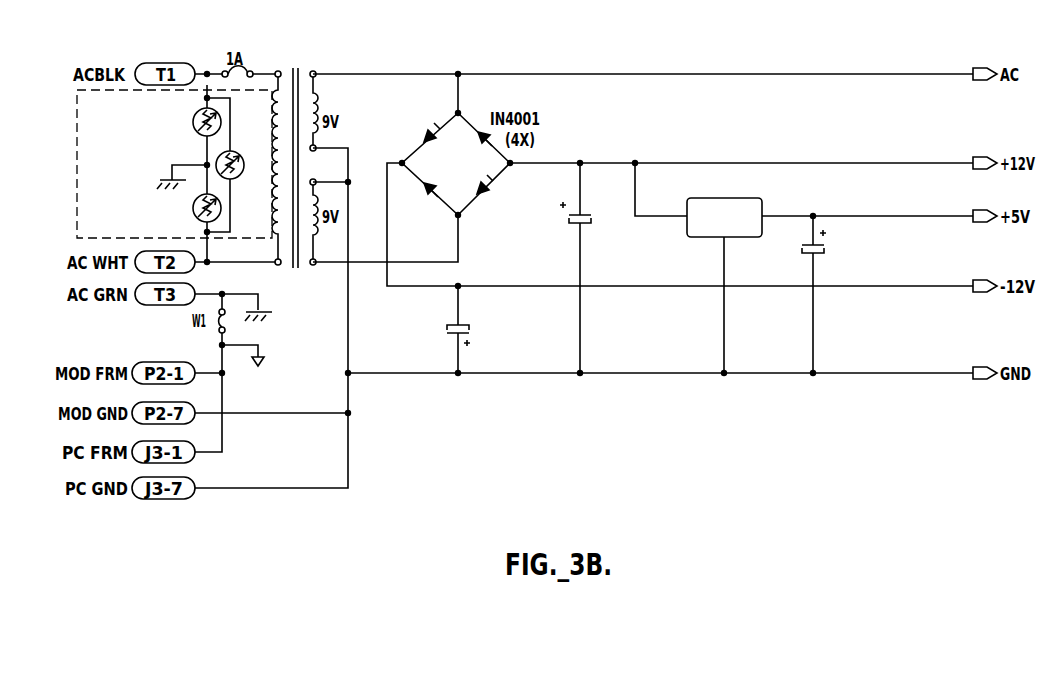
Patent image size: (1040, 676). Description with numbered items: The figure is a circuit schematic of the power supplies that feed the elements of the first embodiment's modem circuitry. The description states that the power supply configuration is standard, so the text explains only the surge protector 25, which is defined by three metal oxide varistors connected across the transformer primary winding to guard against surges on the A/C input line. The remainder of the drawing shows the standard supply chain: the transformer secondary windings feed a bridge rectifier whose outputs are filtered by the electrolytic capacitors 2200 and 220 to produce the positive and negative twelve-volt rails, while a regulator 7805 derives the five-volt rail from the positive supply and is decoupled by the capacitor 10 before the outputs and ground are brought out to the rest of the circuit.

The surge protector 25 is at (77, 210).
The 2200 microfarad filter capacitor 2200 is at (558, 268).
The 220 microfarad filter capacitor 220 is at (475, 330).
The 10 microfarad capacitor 10 is at (825, 295).
The 7805 voltage regulator 7805 is at (724, 217).